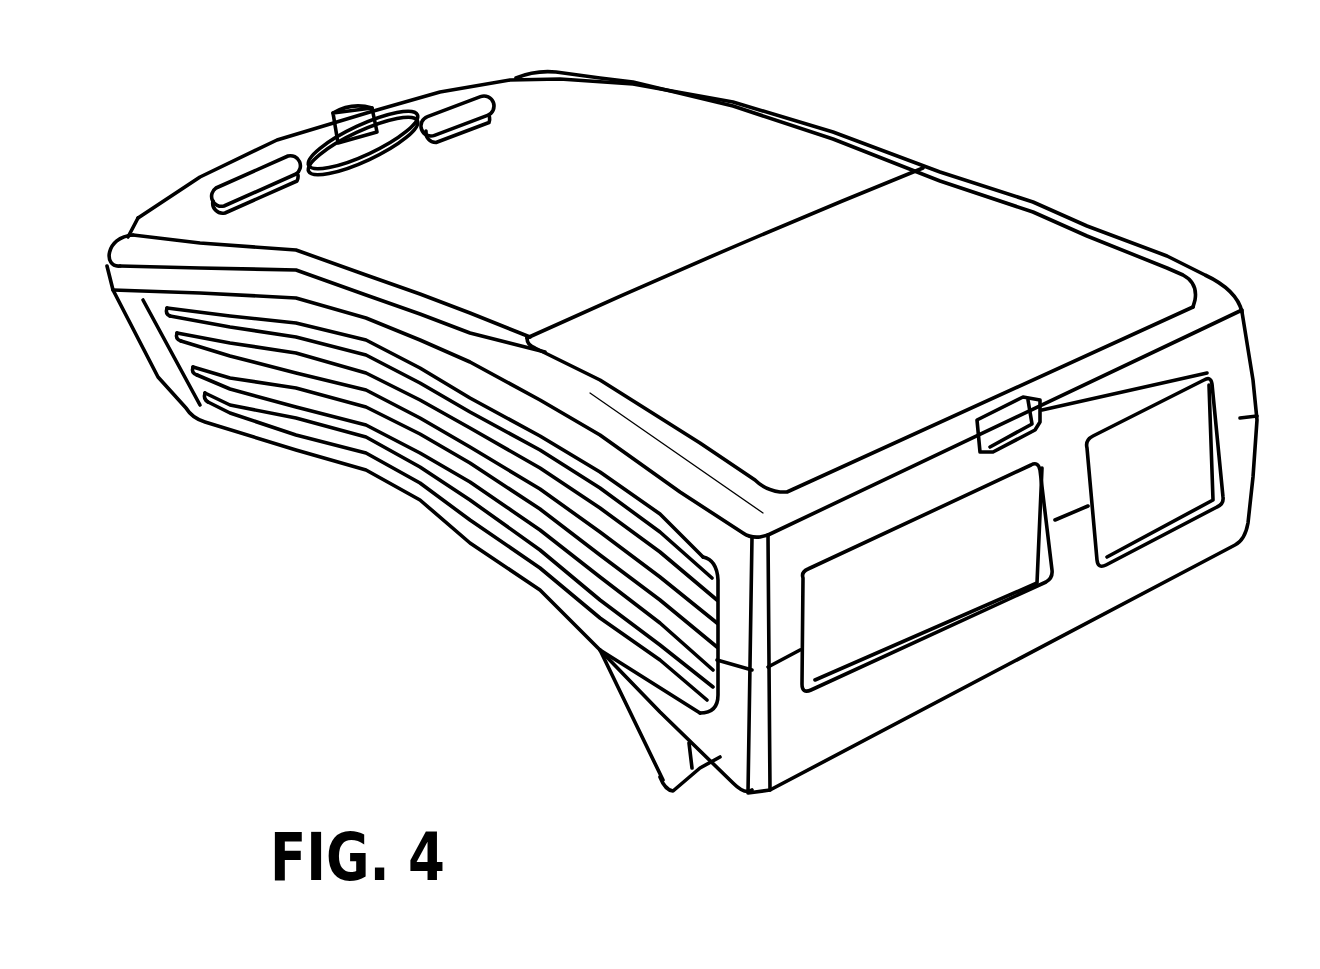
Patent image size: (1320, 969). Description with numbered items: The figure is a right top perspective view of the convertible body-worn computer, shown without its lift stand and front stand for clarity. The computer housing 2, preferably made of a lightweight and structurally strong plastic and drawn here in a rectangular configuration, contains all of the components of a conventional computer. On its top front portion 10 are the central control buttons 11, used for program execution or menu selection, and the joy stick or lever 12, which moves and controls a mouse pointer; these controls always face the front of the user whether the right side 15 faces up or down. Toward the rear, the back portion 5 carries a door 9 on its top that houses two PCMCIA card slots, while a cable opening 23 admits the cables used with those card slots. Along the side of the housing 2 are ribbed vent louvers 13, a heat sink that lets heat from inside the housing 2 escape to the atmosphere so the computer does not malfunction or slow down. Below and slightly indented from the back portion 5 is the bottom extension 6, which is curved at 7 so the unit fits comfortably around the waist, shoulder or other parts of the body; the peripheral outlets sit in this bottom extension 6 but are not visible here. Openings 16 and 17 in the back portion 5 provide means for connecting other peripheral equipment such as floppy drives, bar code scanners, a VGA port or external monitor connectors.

The computer housing 2 is at (873, 157).
The back portion 5 is at (1247, 367).
The bottom extension 6 is at (663, 780).
The curved portion 7 is at (627, 707).
The door 9 is at (1090, 257).
The top front portion 10 is at (180, 183).
The control buttons 11 is at (267, 141).
The joy stick or lever 12 is at (350, 108).
The vent louvers 13 is at (313, 410).
The right side 15 is at (417, 500).
The opening 16 is at (947, 577).
The opening 17 is at (503, 577).
The cable opening 23 is at (1000, 412).